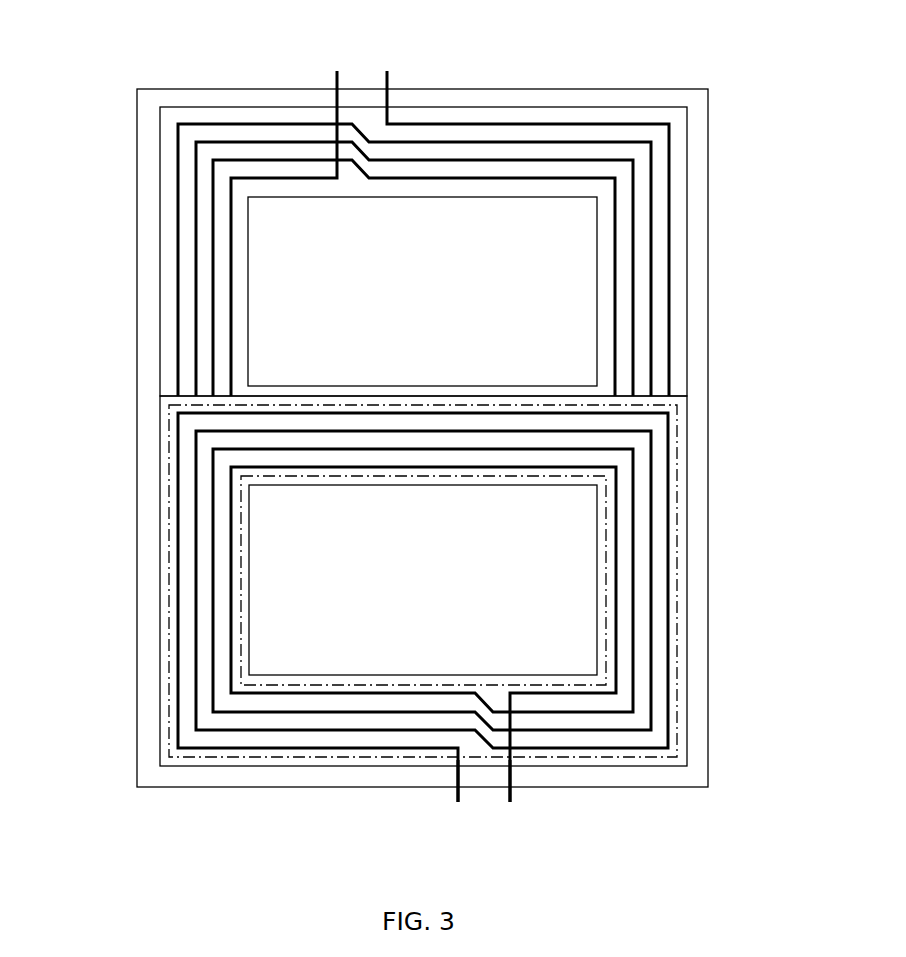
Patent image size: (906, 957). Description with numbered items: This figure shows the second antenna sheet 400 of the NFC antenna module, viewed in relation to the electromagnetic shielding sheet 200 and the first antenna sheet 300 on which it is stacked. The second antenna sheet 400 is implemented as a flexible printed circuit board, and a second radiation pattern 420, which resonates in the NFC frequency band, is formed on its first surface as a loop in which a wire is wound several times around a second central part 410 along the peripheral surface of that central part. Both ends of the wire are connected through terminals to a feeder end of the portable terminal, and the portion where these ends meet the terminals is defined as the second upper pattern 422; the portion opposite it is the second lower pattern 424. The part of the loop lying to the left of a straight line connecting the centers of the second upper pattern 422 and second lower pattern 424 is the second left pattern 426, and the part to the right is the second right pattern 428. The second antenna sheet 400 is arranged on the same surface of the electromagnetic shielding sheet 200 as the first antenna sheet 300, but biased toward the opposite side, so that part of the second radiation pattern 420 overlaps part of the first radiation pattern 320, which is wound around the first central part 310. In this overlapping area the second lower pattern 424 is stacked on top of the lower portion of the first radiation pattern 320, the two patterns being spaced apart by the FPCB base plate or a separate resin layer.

The electromagnetic shielding sheet 200 is at (137, 511).
The first antenna sheet 300 is at (518, 106).
The first central part 310 is at (287, 215).
The first radiation pattern 320 is at (667, 256).
The second antenna sheet 400 is at (567, 766).
The second central part 410 is at (579, 631).
The second radiation pattern 420 is at (668, 532).
The second upper pattern 422 is at (357, 760).
The second lower pattern 424 is at (677, 440).
The second left pattern 426 is at (677, 580).
The second right pattern 428 is at (424, 581).